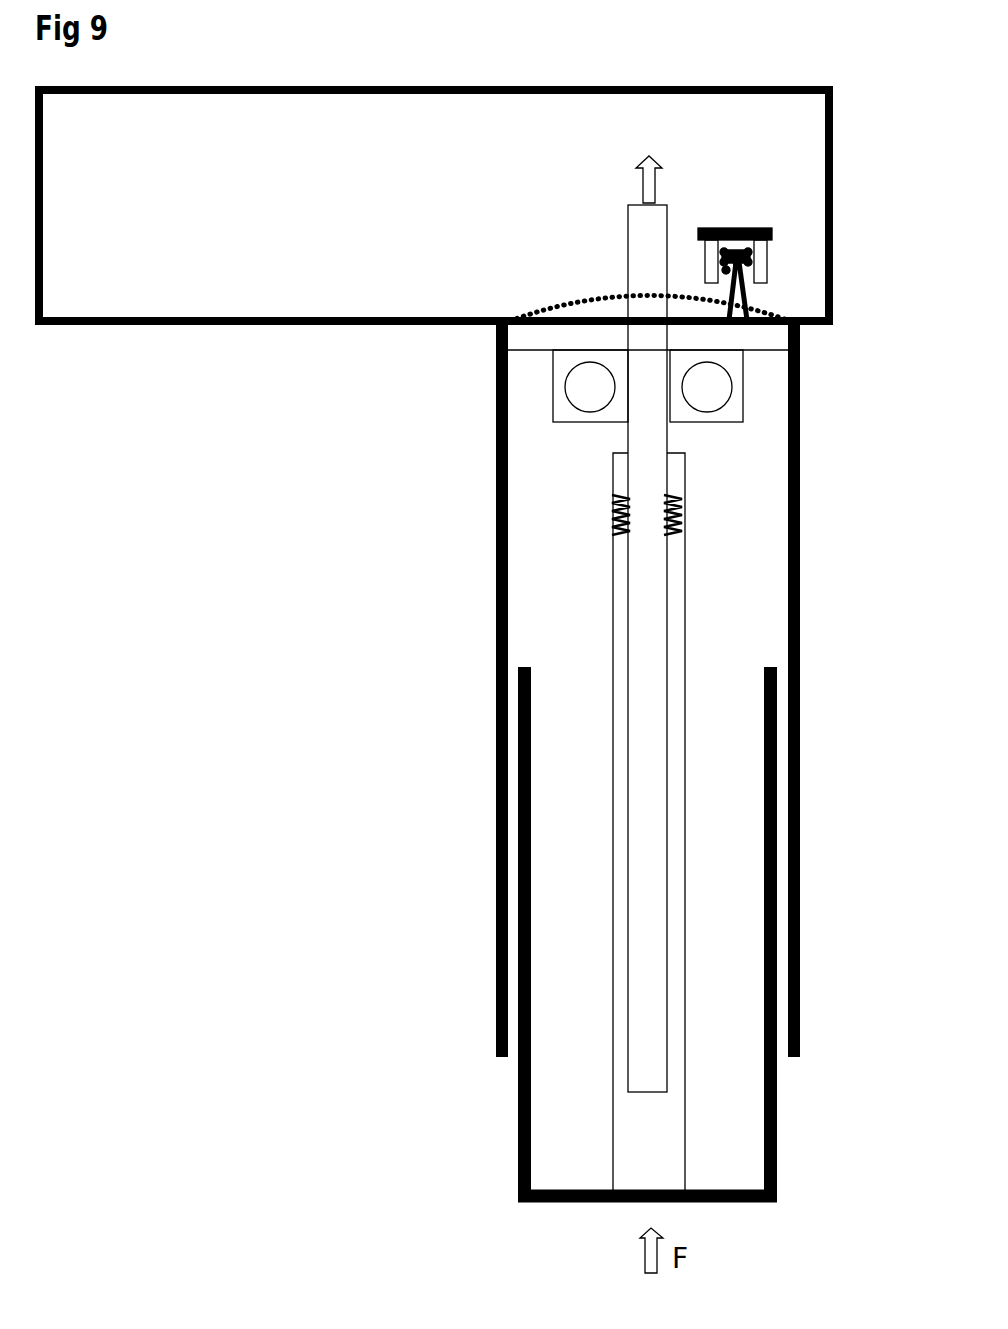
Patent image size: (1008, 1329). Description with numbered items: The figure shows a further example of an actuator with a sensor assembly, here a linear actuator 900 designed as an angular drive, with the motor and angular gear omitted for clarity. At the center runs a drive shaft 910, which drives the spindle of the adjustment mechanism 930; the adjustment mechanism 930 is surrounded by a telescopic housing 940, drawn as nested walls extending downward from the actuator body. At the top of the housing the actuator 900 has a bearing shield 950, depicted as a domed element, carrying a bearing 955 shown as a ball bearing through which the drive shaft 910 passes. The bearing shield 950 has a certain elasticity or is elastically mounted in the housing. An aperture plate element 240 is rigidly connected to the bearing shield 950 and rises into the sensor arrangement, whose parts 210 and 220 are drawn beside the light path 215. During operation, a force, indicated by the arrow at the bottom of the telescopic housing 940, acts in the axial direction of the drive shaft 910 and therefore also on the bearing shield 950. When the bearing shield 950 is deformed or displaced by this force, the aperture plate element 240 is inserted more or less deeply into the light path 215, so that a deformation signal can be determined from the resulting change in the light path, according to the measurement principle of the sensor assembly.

The linear actuator 900 is at (157, 327).
The drive shaft 910 is at (628, 228).
The bearing shield 950 is at (556, 308).
The bearing 955 is at (613, 420).
The adjustment mechanism 930 is at (613, 618).
The telescopic housing 940 is at (495, 708).
The light path 215 is at (723, 228).
The legs 210 is at (765, 261).
The element 220 is at (702, 265).
The aperture plate element 240 is at (743, 290).